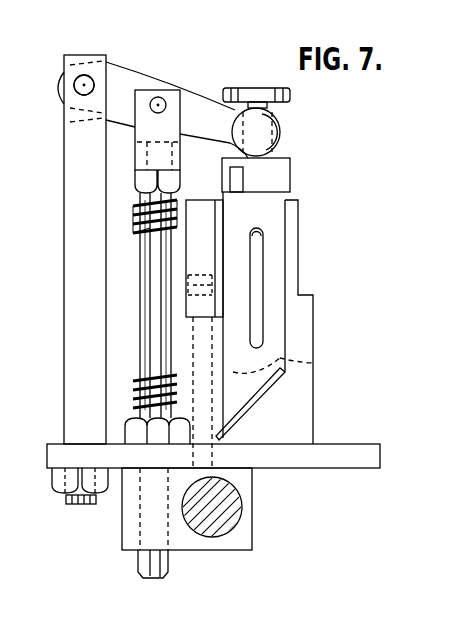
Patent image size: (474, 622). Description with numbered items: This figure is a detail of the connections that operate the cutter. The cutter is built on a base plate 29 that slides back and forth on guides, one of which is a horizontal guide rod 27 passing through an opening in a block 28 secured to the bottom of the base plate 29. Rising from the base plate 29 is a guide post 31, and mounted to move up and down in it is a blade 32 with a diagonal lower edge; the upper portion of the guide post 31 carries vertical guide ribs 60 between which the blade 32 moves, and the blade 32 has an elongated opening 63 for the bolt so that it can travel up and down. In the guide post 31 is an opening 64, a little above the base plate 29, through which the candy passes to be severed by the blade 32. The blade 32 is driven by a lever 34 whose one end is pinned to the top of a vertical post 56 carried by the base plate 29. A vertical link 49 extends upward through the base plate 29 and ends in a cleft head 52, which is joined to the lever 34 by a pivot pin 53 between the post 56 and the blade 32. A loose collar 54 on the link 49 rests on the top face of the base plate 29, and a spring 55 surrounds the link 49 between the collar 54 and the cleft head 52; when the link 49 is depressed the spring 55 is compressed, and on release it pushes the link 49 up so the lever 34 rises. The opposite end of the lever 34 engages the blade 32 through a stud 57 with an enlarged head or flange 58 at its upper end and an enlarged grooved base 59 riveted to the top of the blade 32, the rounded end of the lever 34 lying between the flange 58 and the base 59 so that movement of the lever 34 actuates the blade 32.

The horizontal guide rod 27 is at (242, 505).
The block 28 is at (130, 512).
The base plate 29 is at (346, 456).
The guide post 31 is at (303, 217).
The blade 32 is at (277, 243).
The lever 34 is at (203, 93).
The vertical link 49 is at (168, 568).
The cleft head 52 is at (143, 95).
The pivot pin 53 is at (162, 100).
The loose collar 54 is at (125, 430).
The spring 55 is at (140, 233).
The vertical post 56 is at (78, 225).
The stud 57 is at (278, 128).
The enlarged head or flange 58 is at (258, 100).
The grooved base 59 is at (291, 174).
The vertical guide ribs 60 is at (300, 275).
The elongated opening 63 is at (260, 327).
The opening 64 is at (317, 363).